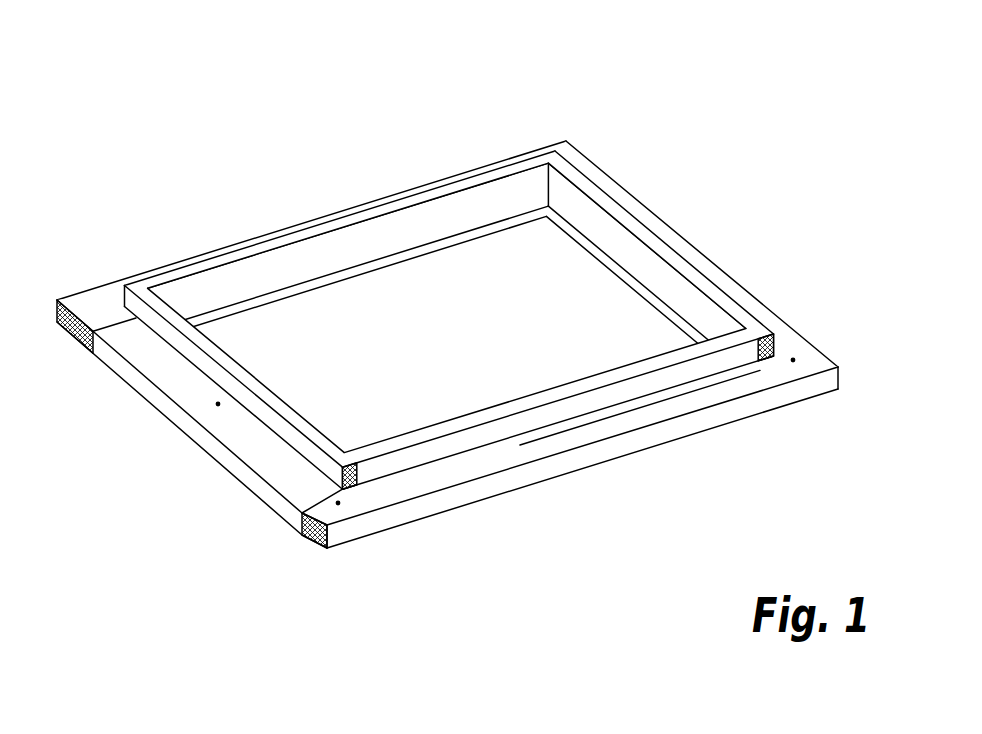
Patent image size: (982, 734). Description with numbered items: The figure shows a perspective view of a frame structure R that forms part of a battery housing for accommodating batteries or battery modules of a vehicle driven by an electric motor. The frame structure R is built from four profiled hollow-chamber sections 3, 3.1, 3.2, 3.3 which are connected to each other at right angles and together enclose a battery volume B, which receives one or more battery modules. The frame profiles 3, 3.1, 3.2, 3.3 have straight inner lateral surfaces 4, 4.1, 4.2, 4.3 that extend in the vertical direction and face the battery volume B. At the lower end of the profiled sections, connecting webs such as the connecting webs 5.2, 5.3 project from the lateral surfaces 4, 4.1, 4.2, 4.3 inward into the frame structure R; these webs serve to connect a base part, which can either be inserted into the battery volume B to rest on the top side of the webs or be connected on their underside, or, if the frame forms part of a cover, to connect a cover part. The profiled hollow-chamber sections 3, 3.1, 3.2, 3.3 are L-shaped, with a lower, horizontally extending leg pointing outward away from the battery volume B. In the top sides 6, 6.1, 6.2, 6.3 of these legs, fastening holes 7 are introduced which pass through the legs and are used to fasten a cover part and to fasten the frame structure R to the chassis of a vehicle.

The profiled hollow-chamber section 3 is at (493, 494).
The profiled hollow-chamber section 3.1 is at (182, 418).
The profiled hollow-chamber section 3.2 is at (468, 176).
The profiled hollow-chamber section 3.3 is at (752, 276).
The inner lateral surface 4 is at (404, 432).
The inner lateral surface 4.1 is at (259, 370).
The inner lateral surface 4.2 is at (369, 260).
The inner lateral surface 4.3 is at (605, 250).
The connecting web 5.2 is at (282, 318).
The connecting web 5.3 is at (617, 284).
The top side of leg 6 is at (403, 491).
The top side of leg 6.1 is at (242, 451).
The top side of leg 6.2 is at (96, 295).
The top side of leg 6.3 is at (625, 188).
The fastening hole 7 is at (568, 431).
The battery volume B is at (523, 191).
The frame structure R is at (567, 138).